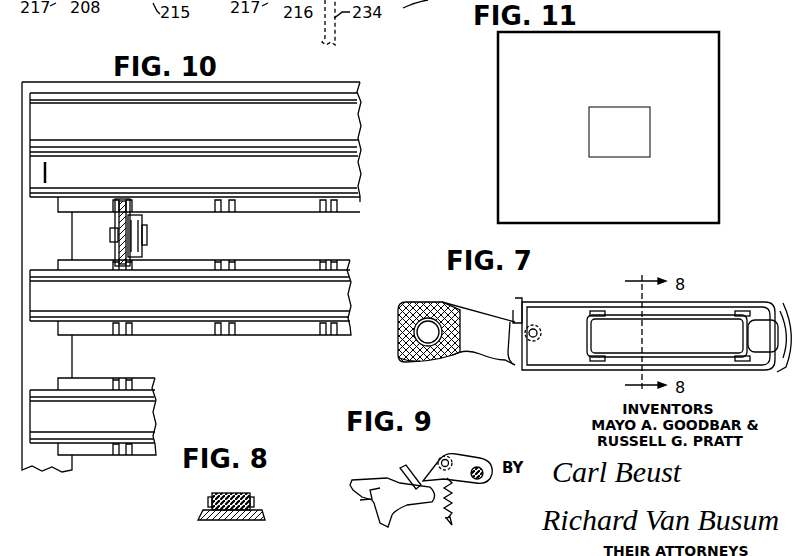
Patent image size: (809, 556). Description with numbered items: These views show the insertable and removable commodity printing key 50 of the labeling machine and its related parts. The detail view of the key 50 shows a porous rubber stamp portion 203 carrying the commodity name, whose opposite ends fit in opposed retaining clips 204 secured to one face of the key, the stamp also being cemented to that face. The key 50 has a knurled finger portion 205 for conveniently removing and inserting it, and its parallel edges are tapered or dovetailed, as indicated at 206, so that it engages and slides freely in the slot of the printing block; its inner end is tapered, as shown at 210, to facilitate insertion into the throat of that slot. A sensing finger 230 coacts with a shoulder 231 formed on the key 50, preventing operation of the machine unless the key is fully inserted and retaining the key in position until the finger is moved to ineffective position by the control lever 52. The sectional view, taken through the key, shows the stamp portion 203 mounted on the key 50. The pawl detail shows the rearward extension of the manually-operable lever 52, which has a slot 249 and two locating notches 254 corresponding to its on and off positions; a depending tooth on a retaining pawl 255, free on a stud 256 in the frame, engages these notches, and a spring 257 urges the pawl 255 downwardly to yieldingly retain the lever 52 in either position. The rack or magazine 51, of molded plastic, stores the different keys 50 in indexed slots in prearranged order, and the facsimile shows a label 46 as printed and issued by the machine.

In FIG. 11, the label 46 is at (700, 22).
In FIG. 10, the commodity printing key 50 is at (119, 244).
In FIG. 8, the commodity printing key 50 is at (258, 513).
In FIG. 7, the commodity printing key 50 is at (433, 301).
In FIG. 10, the rack or magazine 51 is at (306, 88).
In FIG. 9, the control lever 52 is at (377, 518).
In FIG. 10, the porous rubber stamp portion 203 is at (135, 239).
In FIG. 8, the porous rubber stamp portion 203 is at (237, 497).
In FIG. 7, the porous rubber stamp portion 203 is at (617, 345).
In FIG. 7, the retaining clips 204 is at (590, 313).
In FIG. 7, the knurled finger portion 205 is at (410, 365).
In FIG. 7, the tapered or dovetailed edges 206 is at (570, 306).
In FIG. 7, the tapered inner end 210 is at (775, 378).
In FIG. 7, the sensing finger 230 is at (514, 305).
In FIG. 7, the shoulder 231 is at (510, 357).
In FIG. 9, the slot 249 is at (362, 502).
In FIG. 9, the locating notches 254 is at (406, 470).
In FIG. 9, the retaining pawl 255 is at (470, 464).
In FIG. 9, the stud 256 is at (478, 480).
In FIG. 9, the spring 257 is at (449, 522).